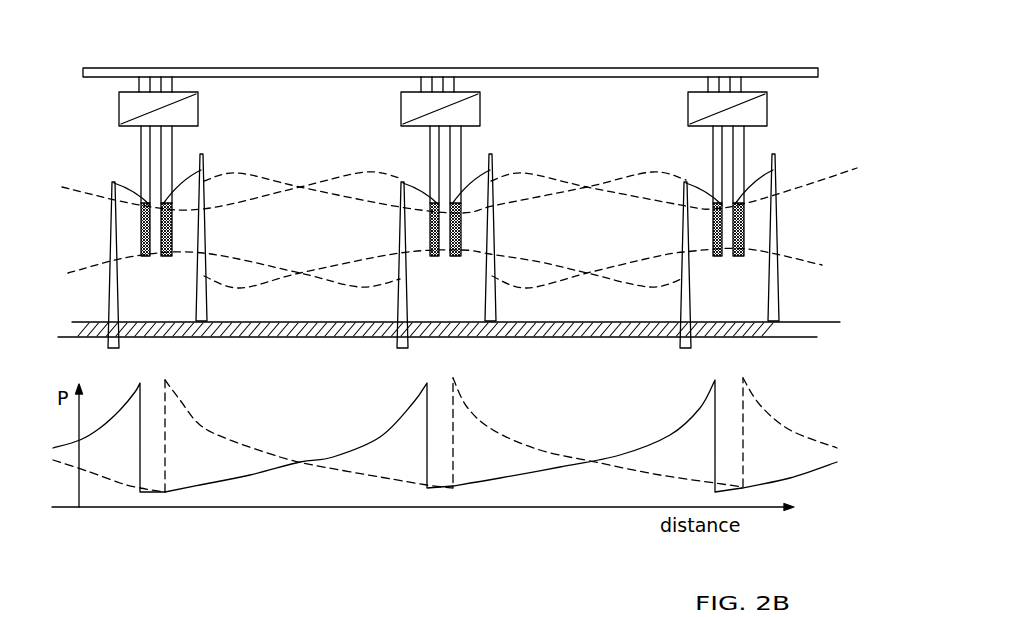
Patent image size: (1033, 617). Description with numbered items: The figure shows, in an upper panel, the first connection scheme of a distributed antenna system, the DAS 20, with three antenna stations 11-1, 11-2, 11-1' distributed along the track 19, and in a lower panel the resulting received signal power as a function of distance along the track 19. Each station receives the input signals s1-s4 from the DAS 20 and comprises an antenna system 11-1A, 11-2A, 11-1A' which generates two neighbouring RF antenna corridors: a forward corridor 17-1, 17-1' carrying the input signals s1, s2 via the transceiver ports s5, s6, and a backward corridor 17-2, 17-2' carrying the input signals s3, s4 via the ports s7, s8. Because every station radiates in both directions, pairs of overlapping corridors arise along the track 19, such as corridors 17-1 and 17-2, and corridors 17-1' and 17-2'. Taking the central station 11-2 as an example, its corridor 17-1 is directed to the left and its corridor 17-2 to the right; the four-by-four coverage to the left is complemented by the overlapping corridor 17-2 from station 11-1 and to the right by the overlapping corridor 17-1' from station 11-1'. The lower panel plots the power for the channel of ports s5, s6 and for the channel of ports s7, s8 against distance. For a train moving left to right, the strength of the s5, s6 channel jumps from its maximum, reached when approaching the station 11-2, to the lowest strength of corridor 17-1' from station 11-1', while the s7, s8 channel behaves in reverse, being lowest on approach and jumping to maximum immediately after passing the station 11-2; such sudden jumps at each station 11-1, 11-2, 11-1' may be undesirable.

The DAS 20 is at (541, 54).
The antenna station 11-1 is at (132, 216).
The antenna station 11-2 is at (352, 143).
The antenna station 11-1' is at (699, 220).
The input signals s1-s4 is at (160, 49).
The transceiver port s5 is at (141, 138).
The transceiver port s6 is at (150, 172).
The transceiver port s7 is at (160, 178).
The transceiver port s8 is at (172, 140).
The antenna corridor 17-1 is at (374, 180).
The antenna corridor 17-1' is at (674, 178).
The antenna corridor 17-2 is at (376, 279).
The antenna corridor 17-2' is at (657, 278).
The antenna system 11-1A is at (105, 257).
The antenna system 11-2A is at (450, 256).
The antenna system 11-1A' is at (787, 255).
The track 19 is at (303, 338).